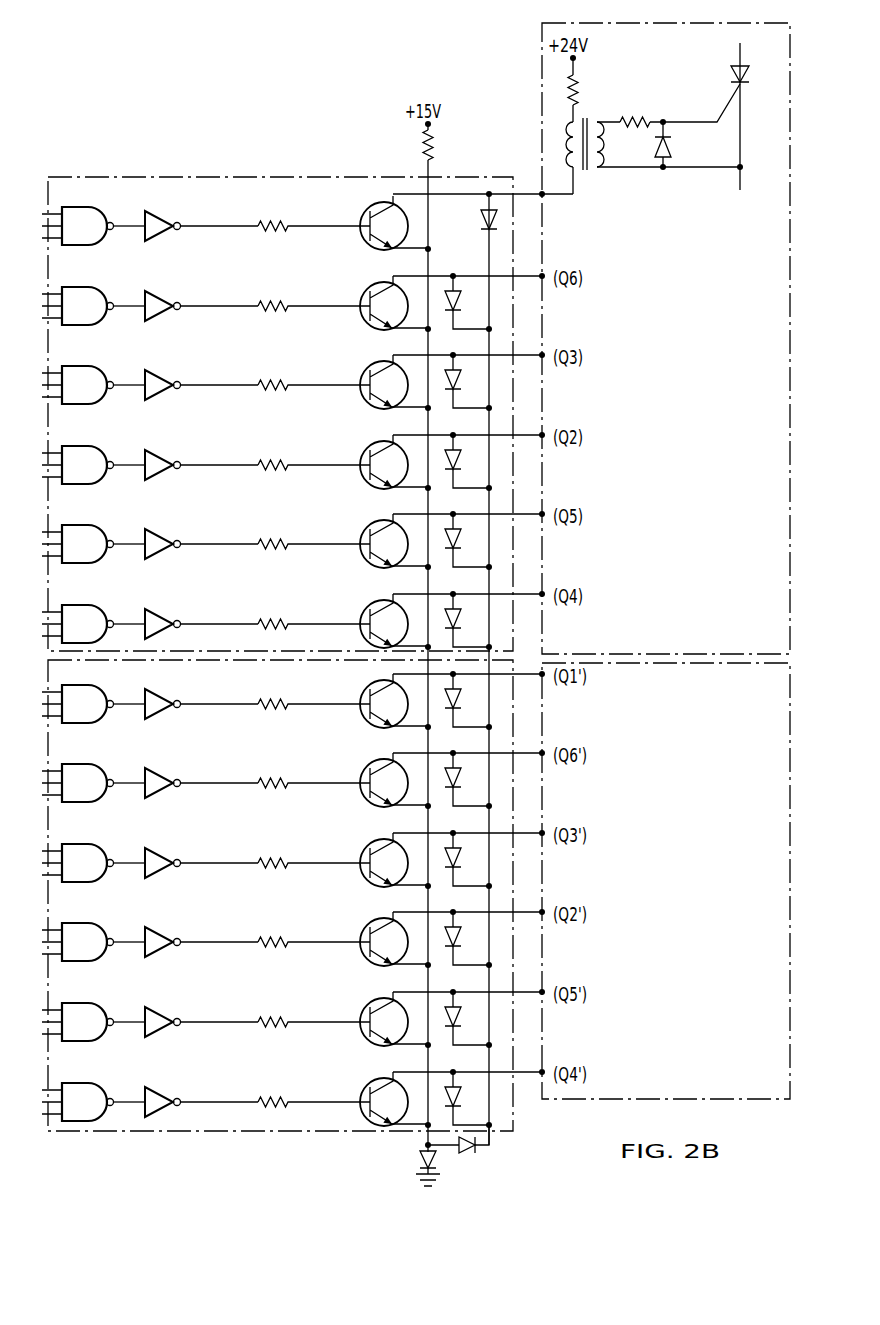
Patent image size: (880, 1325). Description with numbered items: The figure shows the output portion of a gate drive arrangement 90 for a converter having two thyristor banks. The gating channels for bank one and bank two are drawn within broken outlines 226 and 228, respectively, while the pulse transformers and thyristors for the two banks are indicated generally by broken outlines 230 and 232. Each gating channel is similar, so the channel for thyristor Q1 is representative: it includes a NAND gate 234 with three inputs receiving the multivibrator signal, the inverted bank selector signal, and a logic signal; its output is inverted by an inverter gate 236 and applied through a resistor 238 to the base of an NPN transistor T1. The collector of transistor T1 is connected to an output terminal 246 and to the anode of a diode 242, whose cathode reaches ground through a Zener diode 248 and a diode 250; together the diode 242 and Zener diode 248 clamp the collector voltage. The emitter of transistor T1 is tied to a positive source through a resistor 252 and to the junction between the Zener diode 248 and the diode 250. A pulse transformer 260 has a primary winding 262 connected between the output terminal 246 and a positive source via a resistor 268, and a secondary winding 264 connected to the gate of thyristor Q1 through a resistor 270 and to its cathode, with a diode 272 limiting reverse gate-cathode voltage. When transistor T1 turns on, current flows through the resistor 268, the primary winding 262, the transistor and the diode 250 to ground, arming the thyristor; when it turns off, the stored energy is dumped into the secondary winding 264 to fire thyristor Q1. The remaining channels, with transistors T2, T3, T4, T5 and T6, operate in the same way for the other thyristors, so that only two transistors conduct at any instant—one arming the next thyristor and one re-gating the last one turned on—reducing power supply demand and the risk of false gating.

The gate drive arrangement 90 is at (132, 108).
The gating channels for converter bank I 226 is at (230, 177).
The gating channels for converter bank II 228 is at (236, 1131).
The pulse transformers and thyristors for bank I 230 is at (543, 26).
The pulse transformers and thyristors for bank II 232 is at (550, 1100).
The NAND gate 234 is at (88, 207).
The inverter gate 236 is at (165, 211).
The resistor 238 is at (272, 221).
The diode 242 is at (480, 217).
The output terminal 246 is at (545, 196).
The Zener diode 248 is at (470, 1152).
The diode 250 is at (422, 1160).
The resistor 252 is at (433, 146).
The pulse transformer 260 is at (574, 132).
The primary winding 262 is at (567, 134).
The secondary winding 264 is at (600, 140).
The resistor 268 is at (579, 94).
The resistor 270 is at (632, 118).
The diode 272 is at (665, 168).
The NPN transistor T1 is at (369, 204).
The transistor T2 is at (369, 284).
The transistor T3 is at (369, 363).
The transistor T4 is at (369, 443).
The transistor T5 is at (369, 522).
The transistor T6 is at (369, 602).
The thyristor Q1 is at (748, 80).